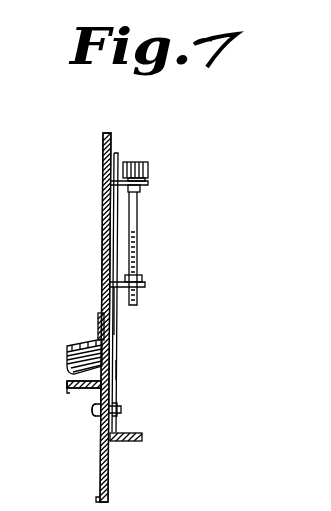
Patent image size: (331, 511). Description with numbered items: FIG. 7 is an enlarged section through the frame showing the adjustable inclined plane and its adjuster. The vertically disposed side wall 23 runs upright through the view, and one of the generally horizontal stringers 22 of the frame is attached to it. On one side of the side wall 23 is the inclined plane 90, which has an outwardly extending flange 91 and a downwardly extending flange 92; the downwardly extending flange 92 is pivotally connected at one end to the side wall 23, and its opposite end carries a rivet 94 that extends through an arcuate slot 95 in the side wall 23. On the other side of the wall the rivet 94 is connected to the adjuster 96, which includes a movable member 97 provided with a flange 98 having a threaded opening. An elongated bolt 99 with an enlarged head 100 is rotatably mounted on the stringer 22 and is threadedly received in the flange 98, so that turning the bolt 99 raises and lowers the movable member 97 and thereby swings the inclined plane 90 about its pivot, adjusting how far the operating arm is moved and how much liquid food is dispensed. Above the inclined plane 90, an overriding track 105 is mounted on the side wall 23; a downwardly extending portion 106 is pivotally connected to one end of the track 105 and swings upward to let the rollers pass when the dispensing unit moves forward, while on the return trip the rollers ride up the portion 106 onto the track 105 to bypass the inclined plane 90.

The stringer 22 is at (116, 152).
The side wall 23 is at (102, 205).
The inclined plane 90 is at (60, 397).
The outwardly extending flange 91 is at (67, 382).
The downwardly extending flange 92 is at (92, 409).
The rivet 94 is at (121, 412).
The arcuate slot 95 is at (117, 368).
The adjuster 96 is at (136, 326).
The movable member 97 is at (119, 403).
The flange 98 is at (146, 283).
The elongated bolt 99 is at (139, 230).
The enlarged head 100 is at (149, 170).
The overriding track 105 is at (80, 340).
The downwardly extending portion 106 is at (67, 356).